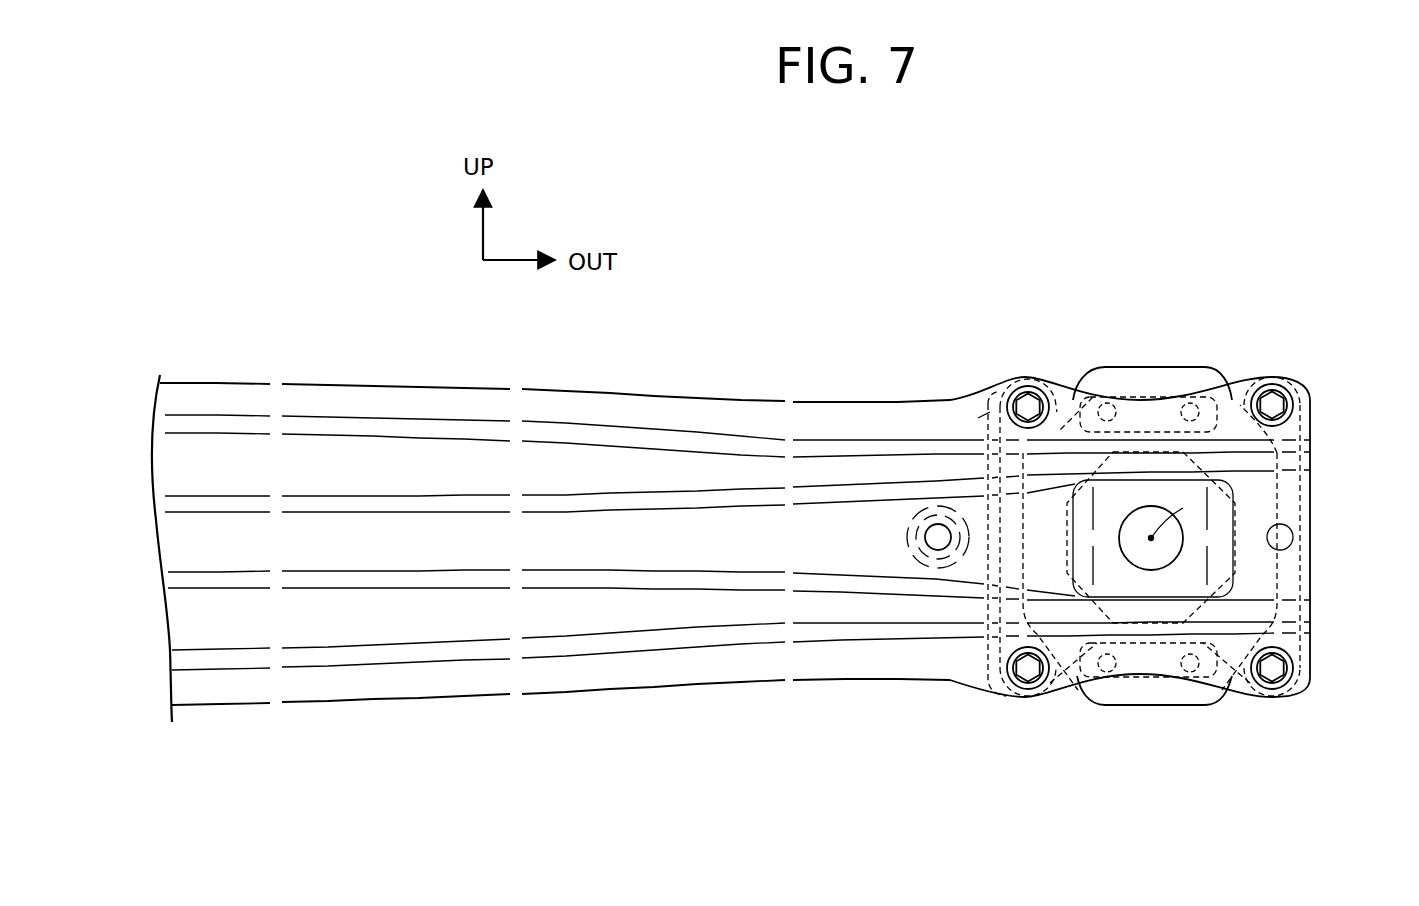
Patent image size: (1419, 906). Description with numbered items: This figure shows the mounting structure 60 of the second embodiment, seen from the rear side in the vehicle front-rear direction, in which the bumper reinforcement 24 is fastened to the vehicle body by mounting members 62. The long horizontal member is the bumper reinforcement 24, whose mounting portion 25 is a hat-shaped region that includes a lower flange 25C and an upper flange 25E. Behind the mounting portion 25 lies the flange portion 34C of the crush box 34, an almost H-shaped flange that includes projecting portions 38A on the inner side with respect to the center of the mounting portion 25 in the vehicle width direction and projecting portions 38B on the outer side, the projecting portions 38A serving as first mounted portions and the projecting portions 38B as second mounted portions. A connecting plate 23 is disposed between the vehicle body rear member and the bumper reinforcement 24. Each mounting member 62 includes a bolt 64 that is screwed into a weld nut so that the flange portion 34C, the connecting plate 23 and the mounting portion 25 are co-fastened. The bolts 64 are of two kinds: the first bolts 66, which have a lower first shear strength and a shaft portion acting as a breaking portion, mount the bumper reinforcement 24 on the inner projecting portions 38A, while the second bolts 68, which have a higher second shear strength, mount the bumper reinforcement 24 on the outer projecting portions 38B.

The connecting plate 23 is at (978, 418).
The bumper reinforcement 24 is at (610, 697).
The mounting portion 25 is at (1180, 512).
The lower flange 25C is at (1150, 663).
The upper flange 25E is at (1213, 395).
The crush box 34 is at (1182, 362).
The flange portion 34C is at (1093, 397).
The projecting portion 38A is at (1023, 453).
The projecting portion 38B is at (1232, 405).
The mounting structure 60 is at (1161, 512).
The mounting member 62 is at (1300, 427).
The bolt 64 is at (1171, 537).
The first bolt 66 is at (1025, 400).
The second bolt 68 is at (1280, 401).